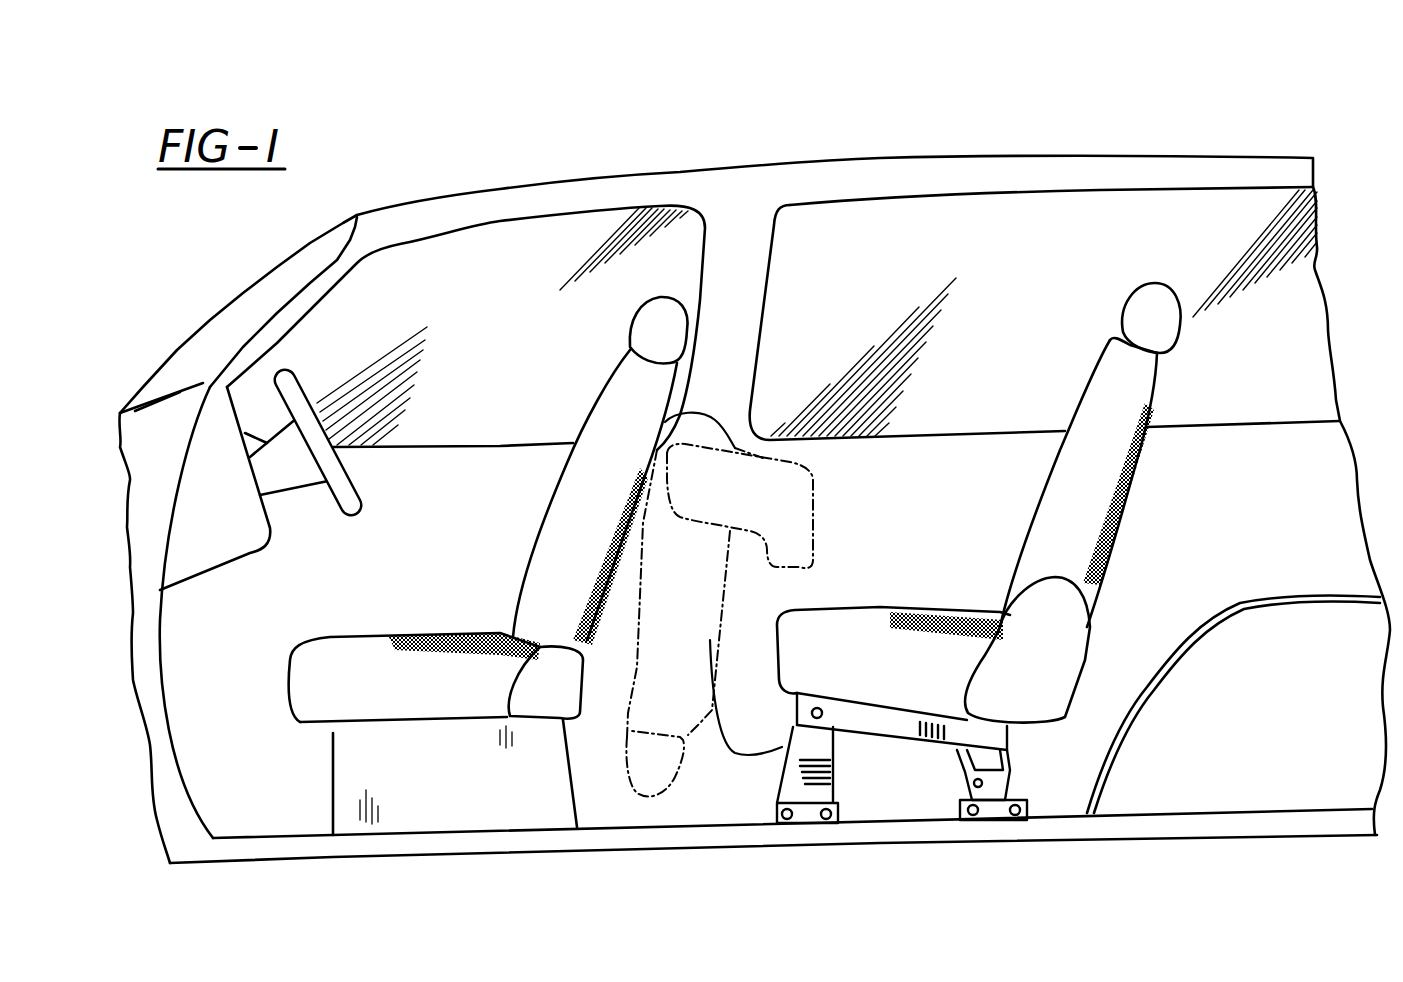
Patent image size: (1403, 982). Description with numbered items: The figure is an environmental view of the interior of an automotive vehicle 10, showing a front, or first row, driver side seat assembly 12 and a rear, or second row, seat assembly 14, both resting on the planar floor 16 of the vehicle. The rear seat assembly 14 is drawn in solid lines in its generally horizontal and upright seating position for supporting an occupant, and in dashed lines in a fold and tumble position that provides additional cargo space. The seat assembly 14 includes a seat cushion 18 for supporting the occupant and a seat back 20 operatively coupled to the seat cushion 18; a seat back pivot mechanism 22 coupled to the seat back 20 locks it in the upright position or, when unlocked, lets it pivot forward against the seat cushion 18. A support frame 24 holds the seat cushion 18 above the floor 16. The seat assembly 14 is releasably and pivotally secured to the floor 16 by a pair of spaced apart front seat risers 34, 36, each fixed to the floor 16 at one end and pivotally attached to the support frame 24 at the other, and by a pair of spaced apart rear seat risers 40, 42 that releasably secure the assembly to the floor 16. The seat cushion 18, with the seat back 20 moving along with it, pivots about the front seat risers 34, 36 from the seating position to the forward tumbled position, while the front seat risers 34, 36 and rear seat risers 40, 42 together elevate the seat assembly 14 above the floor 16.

The automotive vehicle 10 is at (1193, 127).
The front seat assembly 12 is at (288, 684).
The rear seat assembly 14 is at (982, 553).
The floor 16 is at (606, 828).
The seat cushion 18 is at (893, 613).
The seat back 20 is at (1040, 497).
The seat back pivot mechanism 22 is at (1093, 623).
The support frame 24 is at (1017, 727).
The front seat riser 34 is at (851, 775).
The front seat riser 36 is at (827, 760).
The rear seat riser 40 is at (1072, 785).
The rear seat riser 42 is at (1010, 780).